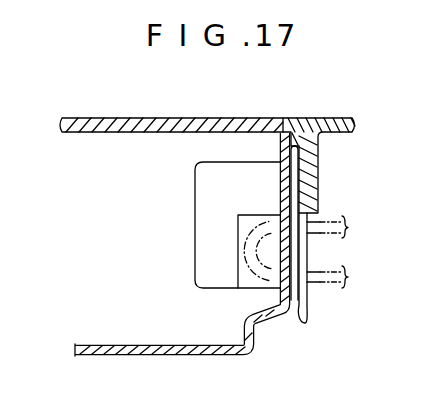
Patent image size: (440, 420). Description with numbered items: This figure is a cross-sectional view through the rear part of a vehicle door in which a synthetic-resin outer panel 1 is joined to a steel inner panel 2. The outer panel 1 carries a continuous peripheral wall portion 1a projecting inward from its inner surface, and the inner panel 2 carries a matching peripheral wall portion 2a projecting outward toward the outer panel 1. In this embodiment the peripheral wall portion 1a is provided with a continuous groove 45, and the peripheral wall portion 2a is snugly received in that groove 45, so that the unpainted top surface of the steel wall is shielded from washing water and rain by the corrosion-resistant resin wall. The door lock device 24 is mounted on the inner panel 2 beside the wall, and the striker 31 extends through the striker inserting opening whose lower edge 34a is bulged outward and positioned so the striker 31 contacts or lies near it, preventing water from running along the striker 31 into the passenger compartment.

The outer panel 1 is at (180, 118).
The peripheral wall portion 1a is at (289, 310).
The inner panel 2 is at (216, 357).
The peripheral wall portion 2a is at (318, 184).
The door lock device 24 is at (195, 203).
The striker 31 is at (340, 221).
The lower edge of the striker inserting opening 34a is at (307, 260).
The continuous groove 45 is at (288, 118).